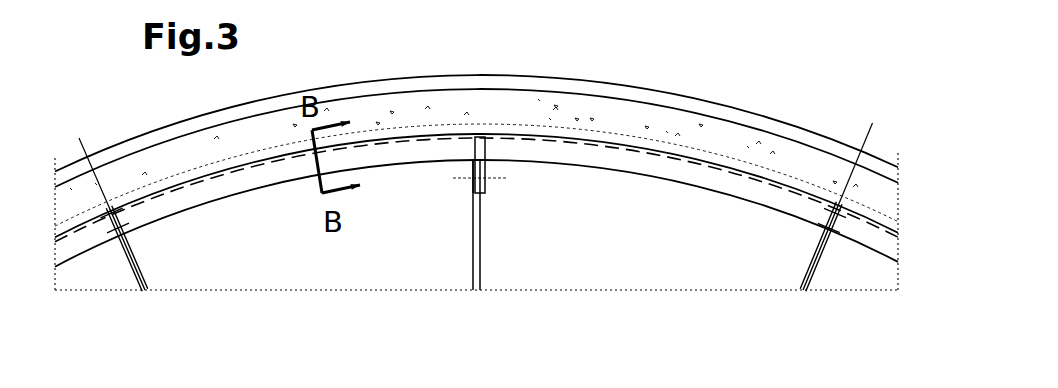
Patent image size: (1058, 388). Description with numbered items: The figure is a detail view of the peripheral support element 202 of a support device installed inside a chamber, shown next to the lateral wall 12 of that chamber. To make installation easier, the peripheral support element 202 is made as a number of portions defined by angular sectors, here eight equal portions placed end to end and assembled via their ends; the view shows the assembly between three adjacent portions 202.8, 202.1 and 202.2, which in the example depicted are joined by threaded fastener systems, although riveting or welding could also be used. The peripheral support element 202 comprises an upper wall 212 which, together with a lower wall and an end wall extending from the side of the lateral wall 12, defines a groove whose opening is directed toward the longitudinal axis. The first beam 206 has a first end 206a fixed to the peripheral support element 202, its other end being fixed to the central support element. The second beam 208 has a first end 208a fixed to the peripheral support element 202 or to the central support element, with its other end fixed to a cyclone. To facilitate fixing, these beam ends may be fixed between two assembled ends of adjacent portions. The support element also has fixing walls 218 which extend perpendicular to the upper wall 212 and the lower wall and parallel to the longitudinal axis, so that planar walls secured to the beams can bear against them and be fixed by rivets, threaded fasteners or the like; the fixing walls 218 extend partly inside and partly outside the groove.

The lateral wall 12 is at (878, 167).
The peripheral support element 202 is at (752, 212).
The portion of peripheral support element 202.1 is at (658, 168).
The portion of peripheral support element 202.2 is at (867, 237).
The portion of peripheral support element 202.8 is at (70, 248).
The first beam 206 is at (480, 245).
The first end of first beam 206a is at (473, 181).
The second beam 208 is at (147, 275).
The first end of second beam 208a is at (110, 245).
The upper wall 212 is at (210, 186).
The fixing wall 218 is at (485, 182).